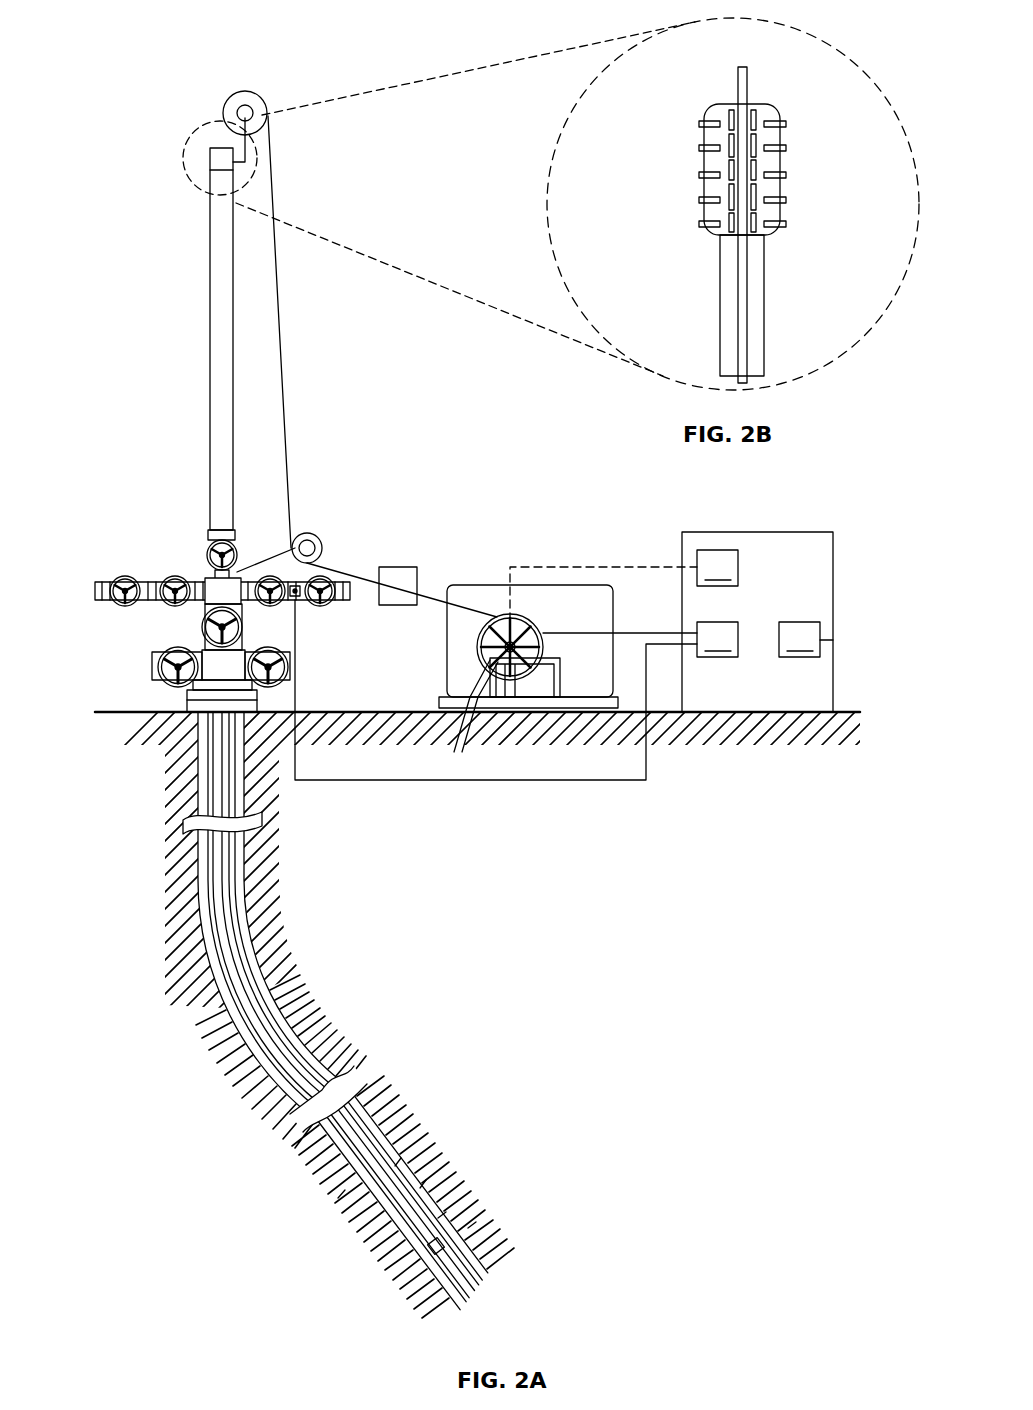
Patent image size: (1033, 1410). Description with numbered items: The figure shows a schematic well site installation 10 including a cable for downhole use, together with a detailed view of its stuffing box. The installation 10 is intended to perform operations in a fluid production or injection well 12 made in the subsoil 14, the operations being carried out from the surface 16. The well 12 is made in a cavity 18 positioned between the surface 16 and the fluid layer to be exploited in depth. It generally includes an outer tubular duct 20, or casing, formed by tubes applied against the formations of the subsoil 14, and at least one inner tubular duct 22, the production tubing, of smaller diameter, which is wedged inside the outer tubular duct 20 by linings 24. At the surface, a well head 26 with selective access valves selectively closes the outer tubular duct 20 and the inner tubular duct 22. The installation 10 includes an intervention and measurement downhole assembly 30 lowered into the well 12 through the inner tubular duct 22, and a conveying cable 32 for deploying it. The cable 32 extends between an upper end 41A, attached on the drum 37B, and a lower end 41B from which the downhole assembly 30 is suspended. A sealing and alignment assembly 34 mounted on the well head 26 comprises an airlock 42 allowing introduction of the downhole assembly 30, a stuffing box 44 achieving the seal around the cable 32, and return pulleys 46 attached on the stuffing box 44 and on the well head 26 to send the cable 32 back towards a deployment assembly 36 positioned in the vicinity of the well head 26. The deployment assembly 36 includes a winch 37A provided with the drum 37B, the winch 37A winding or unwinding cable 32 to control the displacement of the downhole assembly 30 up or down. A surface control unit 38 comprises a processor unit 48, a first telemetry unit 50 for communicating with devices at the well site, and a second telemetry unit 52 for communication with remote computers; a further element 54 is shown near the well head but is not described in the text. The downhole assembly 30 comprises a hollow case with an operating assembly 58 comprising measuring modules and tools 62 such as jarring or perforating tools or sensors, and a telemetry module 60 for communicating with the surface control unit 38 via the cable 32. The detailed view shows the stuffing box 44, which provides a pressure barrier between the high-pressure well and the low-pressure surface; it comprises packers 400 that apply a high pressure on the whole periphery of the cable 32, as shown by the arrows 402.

In FIG. 2A, the installation 10 is at (410, 370).
In FIG. 2A, the well 12 is at (323, 1019).
In FIG. 2A, the subsoil 14 is at (130, 990).
In FIG. 2A, the surface 16 is at (120, 712).
In FIG. 2A, the cavity 18 is at (205, 878).
In FIG. 2A, the outer tubular duct 20 is at (252, 862).
In FIG. 2A, the inner tubular duct 22 is at (275, 1010).
In FIG. 2A, the linings 24 is at (405, 1160).
In FIG. 2A, the well head 26 is at (180, 548).
In FIG. 2A, the downhole assembly 30 is at (460, 1291).
In FIG. 2A, the cable 32 is at (234, 903).
In FIG. 2B, the cable 32 is at (735, 82).
In FIG. 2A, the sealing and alignment assembly 34 is at (289, 268).
In FIG. 2A, the deployment assembly 36 is at (532, 651).
In FIG. 2A, the winch 37A is at (473, 690).
In FIG. 2A, the drum 37B is at (470, 752).
In FIG. 2A, the surface control unit 38 is at (759, 595).
In FIG. 2A, the upper end 41A is at (477, 633).
In FIG. 2A, the lower end 41B is at (430, 1200).
In FIG. 2A, the airlock 42 is at (176, 324).
In FIG. 2B, the airlock 42 is at (719, 303).
In FIG. 2A, the stuffing box 44 is at (215, 160).
In FIG. 2B, the stuffing box 44 is at (686, 184).
In FIG. 2A, the return pulleys 46 is at (250, 100).
In FIG. 2A, the processor unit 48 is at (717, 568).
In FIG. 2A, the first telemetry unit 50 is at (717, 639).
In FIG. 2A, the second telemetry unit 52 is at (806, 639).
In FIG. 2A, the sensor 54 is at (398, 567).
In FIG. 2A, the operating assembly 58 is at (480, 1228).
In FIG. 2A, the telemetry module 60 is at (450, 1225).
In FIG. 2A, the tools 62 is at (447, 1250).
In FIG. 2B, the packers 400 is at (723, 183).
In FIG. 2B, the arrows 402 is at (699, 224).